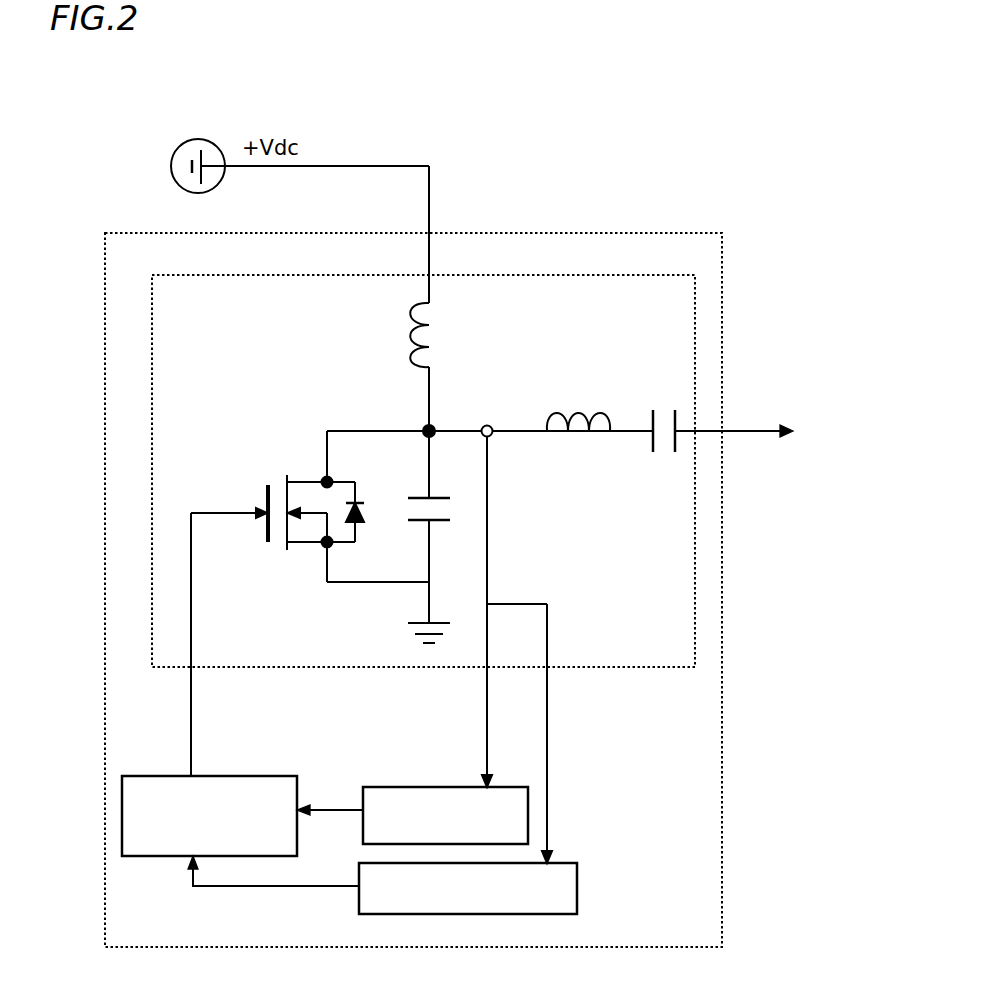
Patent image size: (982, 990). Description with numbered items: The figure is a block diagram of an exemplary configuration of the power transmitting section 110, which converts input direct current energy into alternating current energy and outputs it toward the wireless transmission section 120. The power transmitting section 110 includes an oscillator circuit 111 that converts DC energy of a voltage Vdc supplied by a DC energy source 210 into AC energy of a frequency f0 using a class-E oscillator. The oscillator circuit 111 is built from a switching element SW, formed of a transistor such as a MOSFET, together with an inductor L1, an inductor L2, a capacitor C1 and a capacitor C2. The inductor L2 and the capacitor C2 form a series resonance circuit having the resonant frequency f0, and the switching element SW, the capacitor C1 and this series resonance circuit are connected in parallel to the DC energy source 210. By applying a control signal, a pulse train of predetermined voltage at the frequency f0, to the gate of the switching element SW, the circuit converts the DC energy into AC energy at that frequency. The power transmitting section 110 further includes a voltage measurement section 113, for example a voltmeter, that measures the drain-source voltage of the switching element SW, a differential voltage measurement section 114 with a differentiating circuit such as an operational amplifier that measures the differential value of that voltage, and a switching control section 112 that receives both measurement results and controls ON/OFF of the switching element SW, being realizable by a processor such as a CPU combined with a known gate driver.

The power transmitting section 110 is at (640, 230).
The oscillator circuit 111 is at (647, 668).
The switching control section 112 is at (263, 772).
The voltage measurement section 113 is at (417, 785).
The differential voltage measurement section 114 is at (580, 883).
The wireless transmission section 120 is at (868, 432).
The DC energy source 210 is at (200, 138).
The switching element SW is at (277, 473).
The inductor L1 is at (445, 335).
The inductor L2 is at (578, 407).
The capacitor C1 is at (440, 570).
The capacitor C2 is at (668, 414).